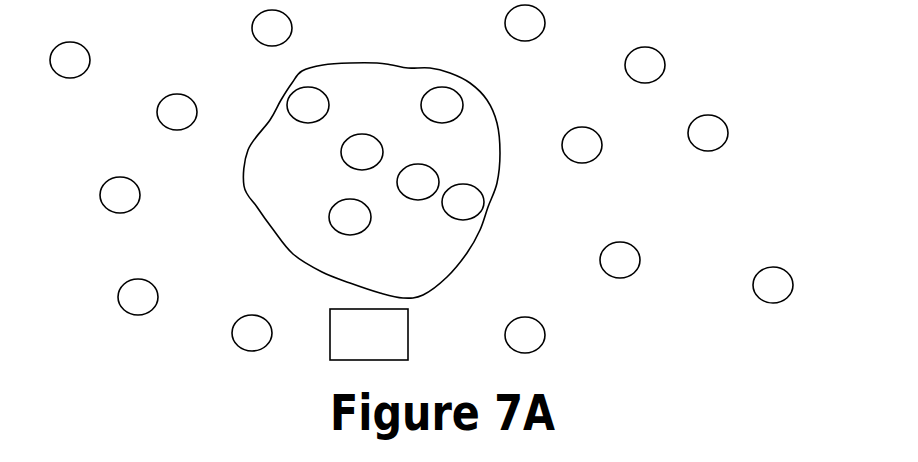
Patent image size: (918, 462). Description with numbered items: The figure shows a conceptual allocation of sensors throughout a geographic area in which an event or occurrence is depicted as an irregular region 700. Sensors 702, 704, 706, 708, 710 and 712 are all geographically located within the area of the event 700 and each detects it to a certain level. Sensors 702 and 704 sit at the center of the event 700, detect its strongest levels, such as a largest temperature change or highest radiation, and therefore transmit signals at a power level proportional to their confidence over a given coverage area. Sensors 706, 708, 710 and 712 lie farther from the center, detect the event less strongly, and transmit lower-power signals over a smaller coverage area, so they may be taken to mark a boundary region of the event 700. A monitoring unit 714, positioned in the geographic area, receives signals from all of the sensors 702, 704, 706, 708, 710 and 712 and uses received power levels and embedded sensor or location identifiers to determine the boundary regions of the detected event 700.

The event 700 is at (243, 187).
The sensor 702 is at (344, 156).
The sensor 704 is at (404, 197).
The sensor 706 is at (292, 117).
The sensor 708 is at (424, 115).
The sensor 710 is at (450, 217).
The sensor 712 is at (332, 222).
The monitoring unit 714 is at (387, 346).